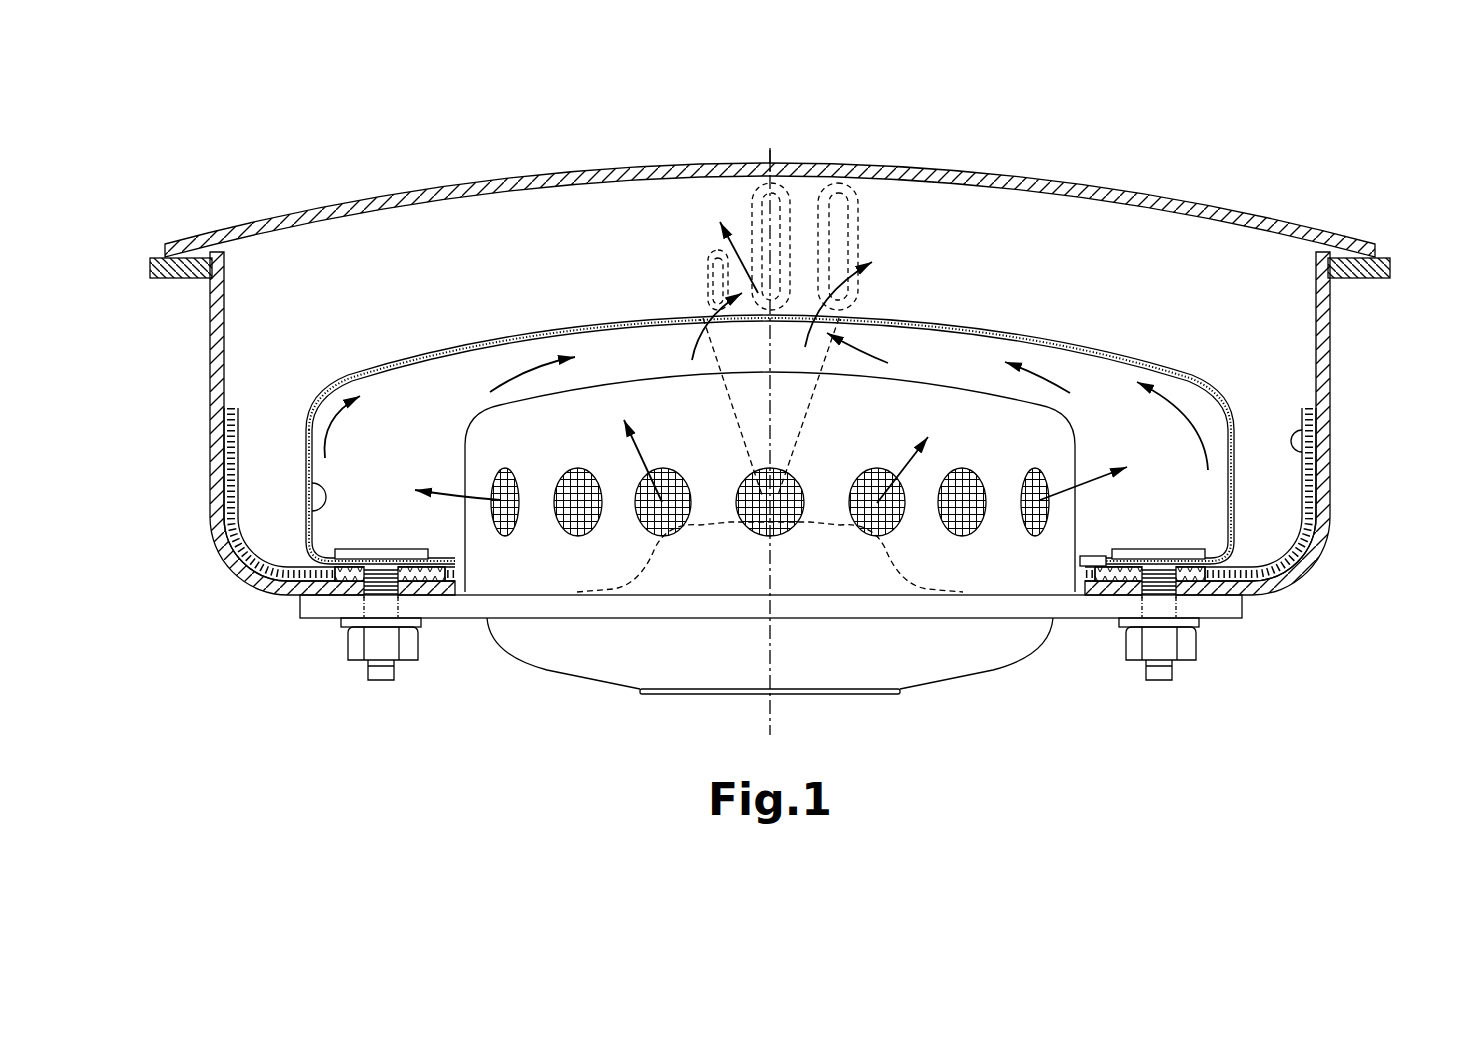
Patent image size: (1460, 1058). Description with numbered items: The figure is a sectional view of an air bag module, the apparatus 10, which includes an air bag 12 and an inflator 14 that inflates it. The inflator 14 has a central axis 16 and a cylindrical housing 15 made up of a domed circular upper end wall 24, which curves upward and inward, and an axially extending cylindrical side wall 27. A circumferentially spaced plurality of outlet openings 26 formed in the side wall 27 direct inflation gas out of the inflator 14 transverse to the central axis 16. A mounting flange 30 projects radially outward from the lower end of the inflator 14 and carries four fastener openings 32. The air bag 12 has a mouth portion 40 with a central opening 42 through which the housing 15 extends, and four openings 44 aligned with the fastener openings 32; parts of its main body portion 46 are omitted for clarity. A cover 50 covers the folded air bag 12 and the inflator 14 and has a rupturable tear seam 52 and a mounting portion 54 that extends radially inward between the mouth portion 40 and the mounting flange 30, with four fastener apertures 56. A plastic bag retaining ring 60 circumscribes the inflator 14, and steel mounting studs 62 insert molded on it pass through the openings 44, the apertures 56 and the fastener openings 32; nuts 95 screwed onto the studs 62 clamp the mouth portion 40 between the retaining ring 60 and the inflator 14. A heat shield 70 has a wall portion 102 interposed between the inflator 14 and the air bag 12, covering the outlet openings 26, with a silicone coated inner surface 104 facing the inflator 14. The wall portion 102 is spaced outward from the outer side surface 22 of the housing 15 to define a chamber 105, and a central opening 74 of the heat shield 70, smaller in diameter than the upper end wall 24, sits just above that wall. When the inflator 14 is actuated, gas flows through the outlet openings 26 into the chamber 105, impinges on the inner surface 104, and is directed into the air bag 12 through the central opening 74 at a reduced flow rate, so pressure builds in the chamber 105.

The apparatus 10 is at (758, 429).
The air bag 12 is at (852, 213).
The inflator 14 is at (957, 675).
The housing 15 is at (1043, 557).
The central axis 16 is at (770, 708).
The outer side surface 22 is at (693, 565).
The upper end wall 24 is at (933, 388).
The outlet openings 26 is at (947, 512).
The side wall 27 is at (460, 462).
The mounting flange 30 is at (1228, 607).
The fastener openings 32 is at (1167, 602).
The mouth portion 40 is at (1255, 547).
The central opening 42 is at (1103, 553).
The openings 44 is at (1196, 549).
The main body portion 46 is at (1310, 418).
The cover 50 is at (1142, 193).
The tear seam 52 is at (778, 158).
The mounting portion 54 is at (363, 593).
The fastener apertures 56 is at (360, 592).
The bag retaining ring 60 is at (367, 546).
The mounting studs 62 is at (387, 673).
The heat shield 70 is at (1237, 485).
The central opening 74 is at (710, 322).
The nuts 95 is at (357, 640).
The wall portion 102 is at (308, 457).
The inner surface 104 is at (303, 510).
The chamber 105 is at (448, 378).